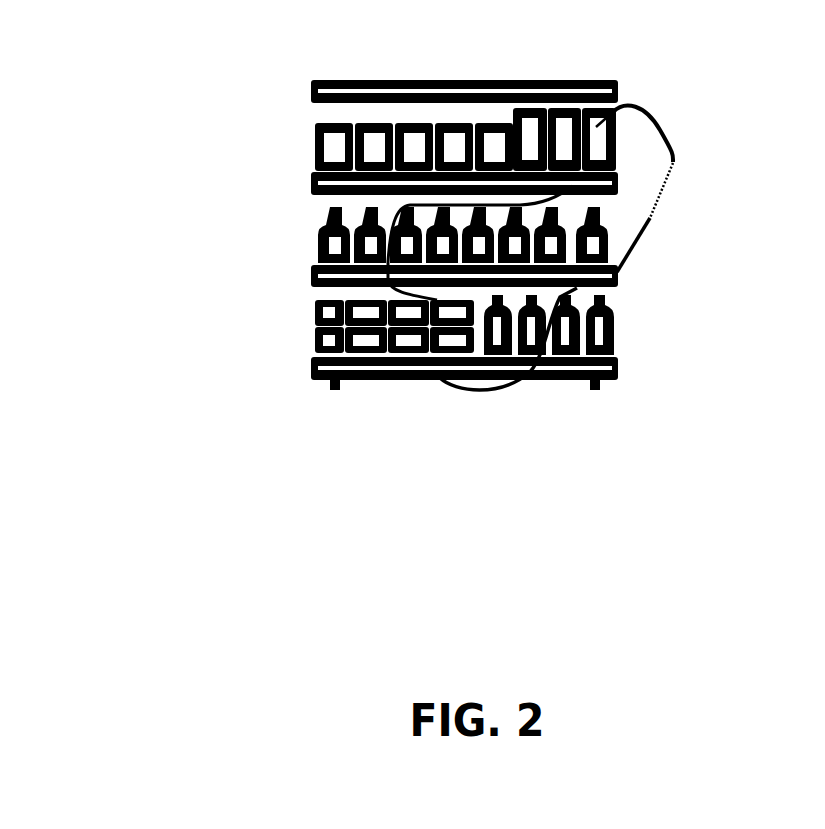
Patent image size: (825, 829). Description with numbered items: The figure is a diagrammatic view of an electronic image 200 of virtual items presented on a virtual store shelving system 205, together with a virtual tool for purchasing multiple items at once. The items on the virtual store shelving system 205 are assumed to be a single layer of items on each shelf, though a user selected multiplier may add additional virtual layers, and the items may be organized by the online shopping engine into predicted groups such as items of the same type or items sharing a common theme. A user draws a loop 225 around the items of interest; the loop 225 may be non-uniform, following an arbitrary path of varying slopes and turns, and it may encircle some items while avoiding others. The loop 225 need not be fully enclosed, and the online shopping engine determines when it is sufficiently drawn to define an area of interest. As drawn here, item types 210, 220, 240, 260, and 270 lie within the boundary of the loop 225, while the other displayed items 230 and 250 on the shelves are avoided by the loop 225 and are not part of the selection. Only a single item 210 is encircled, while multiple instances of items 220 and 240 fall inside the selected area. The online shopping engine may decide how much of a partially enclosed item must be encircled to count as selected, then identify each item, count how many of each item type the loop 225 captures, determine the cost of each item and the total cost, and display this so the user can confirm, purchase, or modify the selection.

The electronic image 200 is at (178, 66).
The virtual store shelving system 205 is at (391, 80).
The item type 210 is at (613, 107).
The item type 220 is at (610, 235).
The loop 225 is at (673, 152).
The boxed products on upper shelf 230 is at (315, 158).
The item type 240 is at (318, 236).
The stacked boxes on lower shelf 250 is at (317, 308).
The item type 260 is at (617, 321).
The item type 270 is at (371, 376).